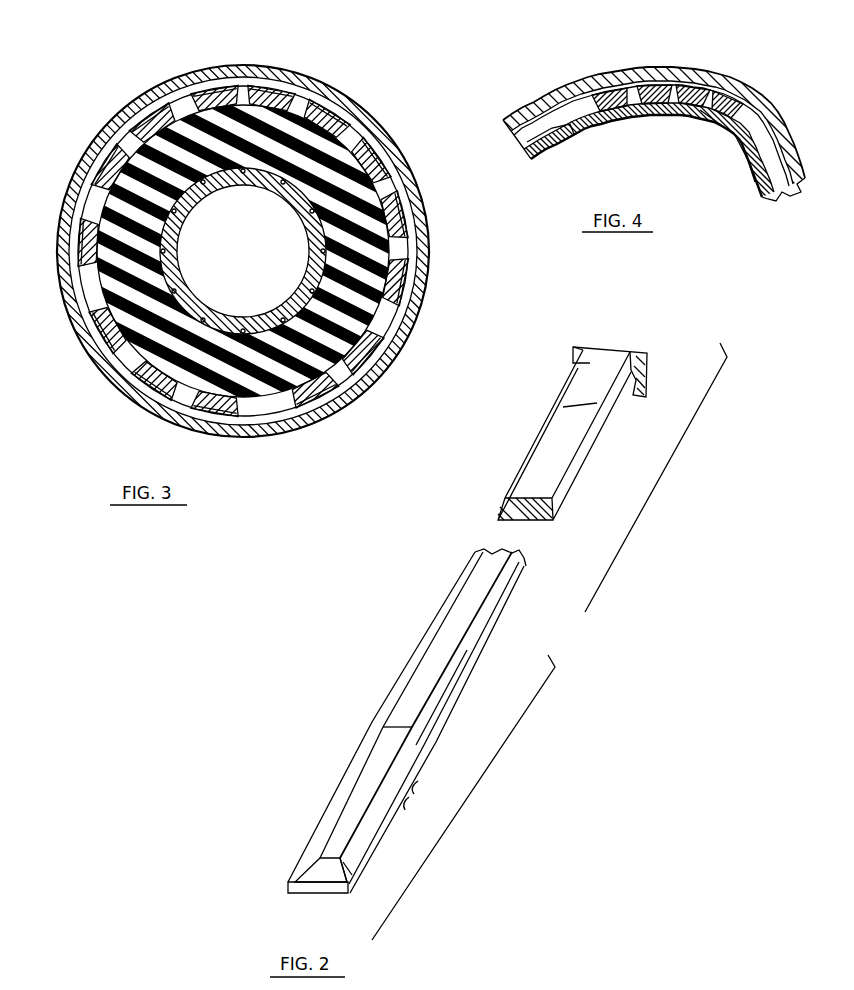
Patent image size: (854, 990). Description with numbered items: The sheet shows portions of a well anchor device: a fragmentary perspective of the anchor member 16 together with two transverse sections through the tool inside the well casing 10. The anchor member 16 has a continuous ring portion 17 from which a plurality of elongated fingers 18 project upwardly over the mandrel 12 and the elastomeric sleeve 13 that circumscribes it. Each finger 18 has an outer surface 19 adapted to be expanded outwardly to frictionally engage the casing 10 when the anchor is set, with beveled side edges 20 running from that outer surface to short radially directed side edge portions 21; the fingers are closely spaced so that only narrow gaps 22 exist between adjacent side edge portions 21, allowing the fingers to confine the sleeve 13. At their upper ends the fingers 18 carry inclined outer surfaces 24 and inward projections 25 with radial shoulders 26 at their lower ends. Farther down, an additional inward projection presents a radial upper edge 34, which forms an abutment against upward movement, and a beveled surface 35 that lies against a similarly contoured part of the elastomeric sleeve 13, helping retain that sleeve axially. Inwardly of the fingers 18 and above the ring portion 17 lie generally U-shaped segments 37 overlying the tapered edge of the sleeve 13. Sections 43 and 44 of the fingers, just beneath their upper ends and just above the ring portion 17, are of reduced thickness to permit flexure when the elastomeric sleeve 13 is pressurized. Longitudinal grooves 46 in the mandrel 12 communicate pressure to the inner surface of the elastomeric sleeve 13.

In FIG. 3, the well casing 10 is at (132, 112).
In FIG. 4, the well casing 10 is at (602, 70).
In FIG. 3, the mandrel 12 is at (214, 318).
In FIG. 3, the elastomeric sleeve 13 is at (113, 308).
In FIG. 2, the anchor member 16 is at (550, 396).
In FIG. 2, the ring portion 17 is at (625, 346).
In FIG. 3, the fingers 18 is at (352, 108).
In FIG. 4, the fingers 18 is at (550, 100).
In FIG. 2, the fingers 18 is at (400, 732).
In FIG. 3, the outer surface 19 is at (352, 98).
In FIG. 4, the outer surface 19 is at (737, 97).
In FIG. 2, the outer surface 19 is at (473, 592).
In FIG. 3, the beveled side edges 20 is at (310, 100).
In FIG. 4, the beveled side edges 20 is at (641, 83).
In FIG. 2, the beveled side edges 20 is at (432, 637).
In FIG. 3, the side edge portions 21 is at (298, 107).
In FIG. 4, the side edge portions 21 is at (700, 103).
In FIG. 2, the side edge portions 21 is at (507, 590).
In FIG. 3, the gaps 22 is at (395, 198).
In FIG. 4, the gaps 22 is at (580, 107).
In FIG. 2, the inclined outer surfaces 24 is at (310, 870).
In FIG. 2, the inward projections 25 is at (352, 875).
In FIG. 2, the radial shoulders 26 is at (360, 862).
In FIG. 2, the radial upper edge 34 is at (404, 808).
In FIG. 2, the beveled surface 35 is at (414, 790).
In FIG. 4, the segments 37 is at (757, 180).
In FIG. 2, the section of reduced thickness 43 is at (362, 833).
In FIG. 2, the section of reduced thickness 44 is at (608, 398).
In FIG. 3, the longitudinal grooves 46 is at (310, 212).